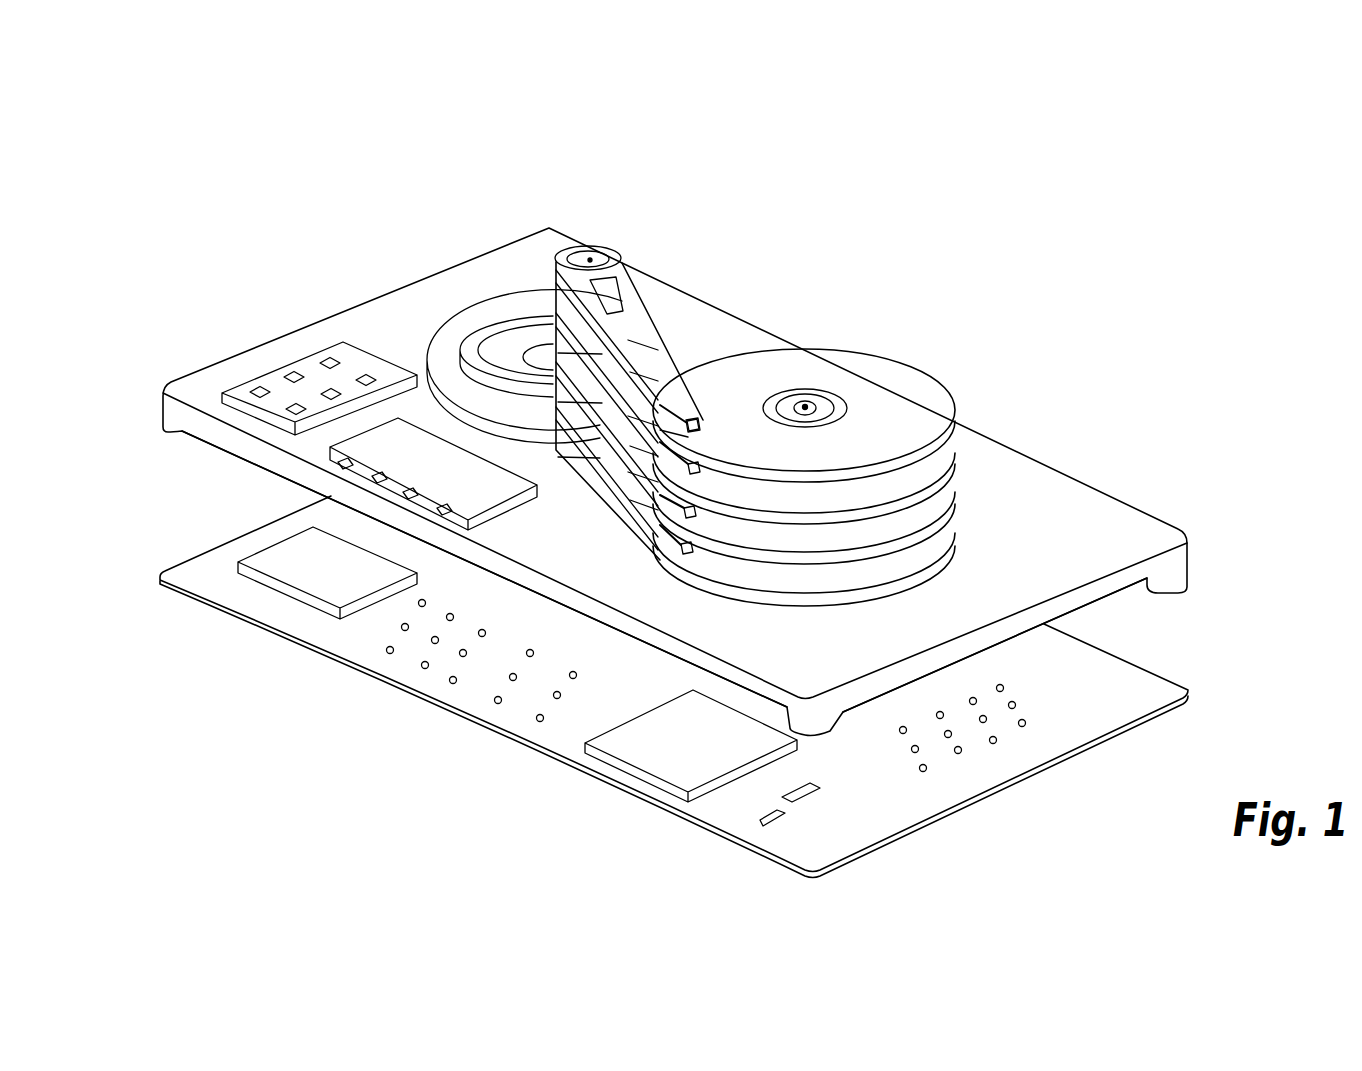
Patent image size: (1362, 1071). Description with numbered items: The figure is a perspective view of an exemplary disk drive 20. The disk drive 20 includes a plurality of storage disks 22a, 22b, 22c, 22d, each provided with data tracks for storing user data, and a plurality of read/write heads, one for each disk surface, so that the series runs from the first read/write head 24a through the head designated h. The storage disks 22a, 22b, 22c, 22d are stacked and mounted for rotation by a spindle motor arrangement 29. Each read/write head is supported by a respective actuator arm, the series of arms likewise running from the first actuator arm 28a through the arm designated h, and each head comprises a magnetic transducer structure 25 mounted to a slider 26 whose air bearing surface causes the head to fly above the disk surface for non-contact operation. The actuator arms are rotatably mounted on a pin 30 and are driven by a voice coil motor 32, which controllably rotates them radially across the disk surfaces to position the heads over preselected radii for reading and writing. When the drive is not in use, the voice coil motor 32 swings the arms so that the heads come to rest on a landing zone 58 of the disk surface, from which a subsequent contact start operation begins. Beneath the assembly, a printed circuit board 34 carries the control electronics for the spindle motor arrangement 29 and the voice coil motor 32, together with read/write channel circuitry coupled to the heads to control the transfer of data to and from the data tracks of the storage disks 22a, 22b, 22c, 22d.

The disk drive 20 is at (262, 279).
The storage disk 22a is at (945, 387).
The storage disk 22b is at (945, 453).
The storage disk 22c is at (940, 495).
The storage disk 22d is at (937, 545).
The read/write head 24a is at (701, 415).
The magnetic transducer structure 25 is at (688, 438).
The slider 26 is at (699, 425).
The actuator arm 28a is at (630, 325).
The spindle motor arrangement 29 is at (805, 404).
The pin 30 is at (590, 254).
The voice coil motor 32 is at (488, 328).
The printed circuit board 34 is at (922, 795).
The landing zone 58 is at (840, 415).
The read/write head / actuator arm (last of series a–h) h is at (734, 326).